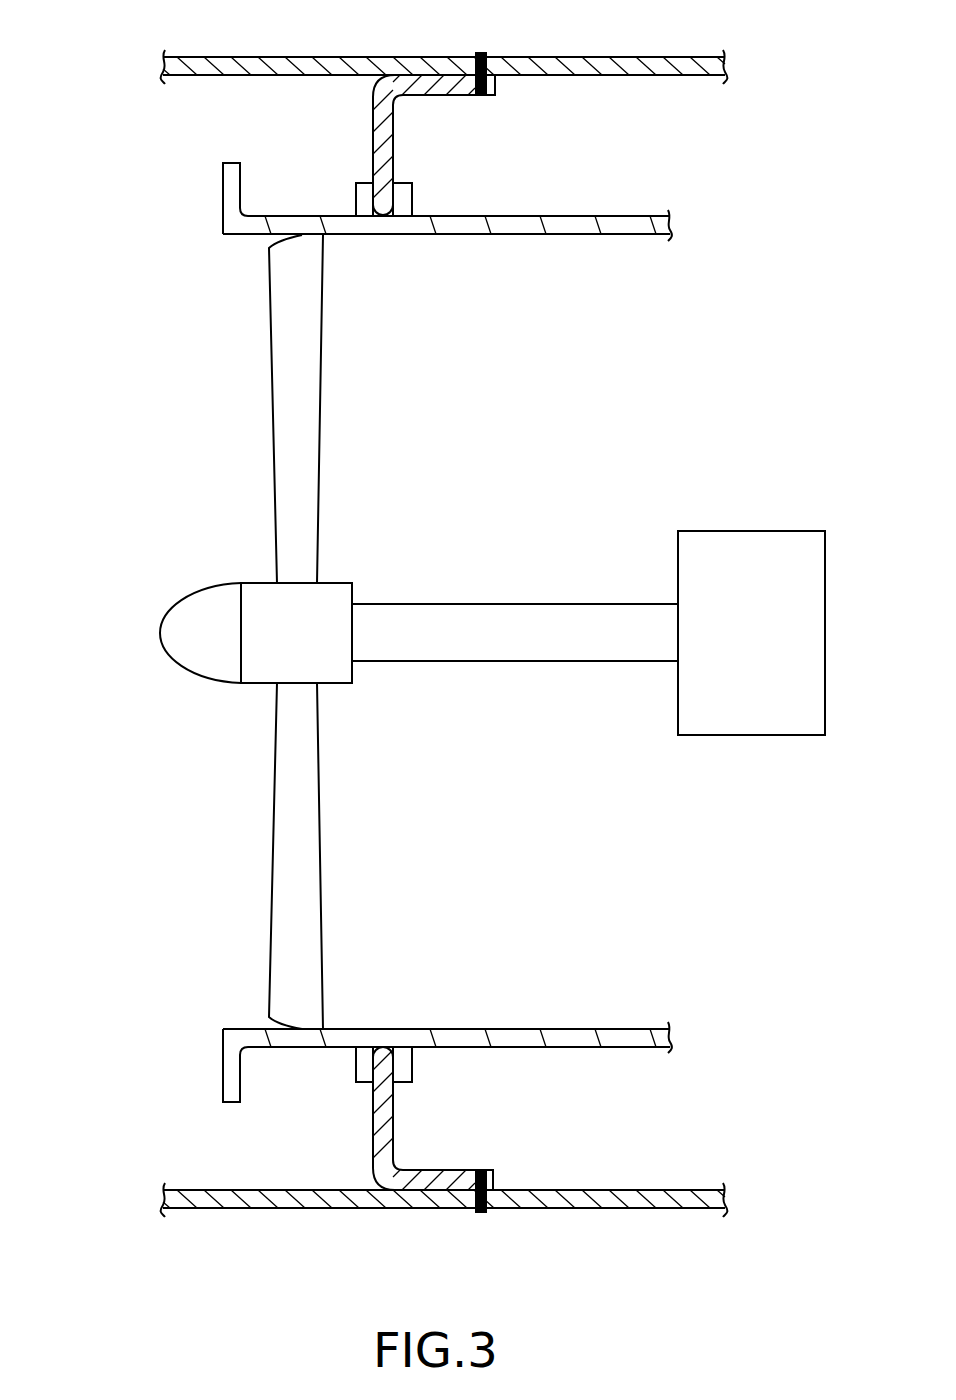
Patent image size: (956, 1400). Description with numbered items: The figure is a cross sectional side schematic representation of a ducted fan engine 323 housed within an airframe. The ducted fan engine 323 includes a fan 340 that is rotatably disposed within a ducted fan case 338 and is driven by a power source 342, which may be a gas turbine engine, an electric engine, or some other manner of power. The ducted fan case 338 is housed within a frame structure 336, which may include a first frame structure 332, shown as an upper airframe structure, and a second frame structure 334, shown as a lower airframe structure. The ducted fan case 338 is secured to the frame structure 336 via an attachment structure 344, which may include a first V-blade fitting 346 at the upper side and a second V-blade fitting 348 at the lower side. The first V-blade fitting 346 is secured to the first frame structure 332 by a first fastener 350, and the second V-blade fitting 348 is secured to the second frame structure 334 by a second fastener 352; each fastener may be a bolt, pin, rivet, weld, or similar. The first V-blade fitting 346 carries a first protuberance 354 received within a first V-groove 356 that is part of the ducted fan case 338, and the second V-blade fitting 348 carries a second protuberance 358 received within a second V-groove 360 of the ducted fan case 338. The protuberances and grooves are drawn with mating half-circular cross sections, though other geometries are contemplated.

The ducted fan engine 323 is at (142, 508).
The first frame structure 332 is at (298, 57).
The second frame structure 334 is at (268, 1210).
The frame structure 336 is at (634, 58).
The ducted fan case 338 is at (590, 238).
The fan 340 is at (290, 792).
The power source 342 is at (755, 530).
The attachment structure 344 is at (372, 122).
The first V-blade fitting 346 is at (384, 147).
The second V-blade fitting 348 is at (384, 1128).
The first fastener 350 is at (478, 50).
The second fastener 352 is at (478, 1212).
The first protuberance 354 is at (384, 198).
The first V-groove 356 is at (366, 196).
The second protuberance 358 is at (385, 1068).
The second V-groove 360 is at (366, 1068).